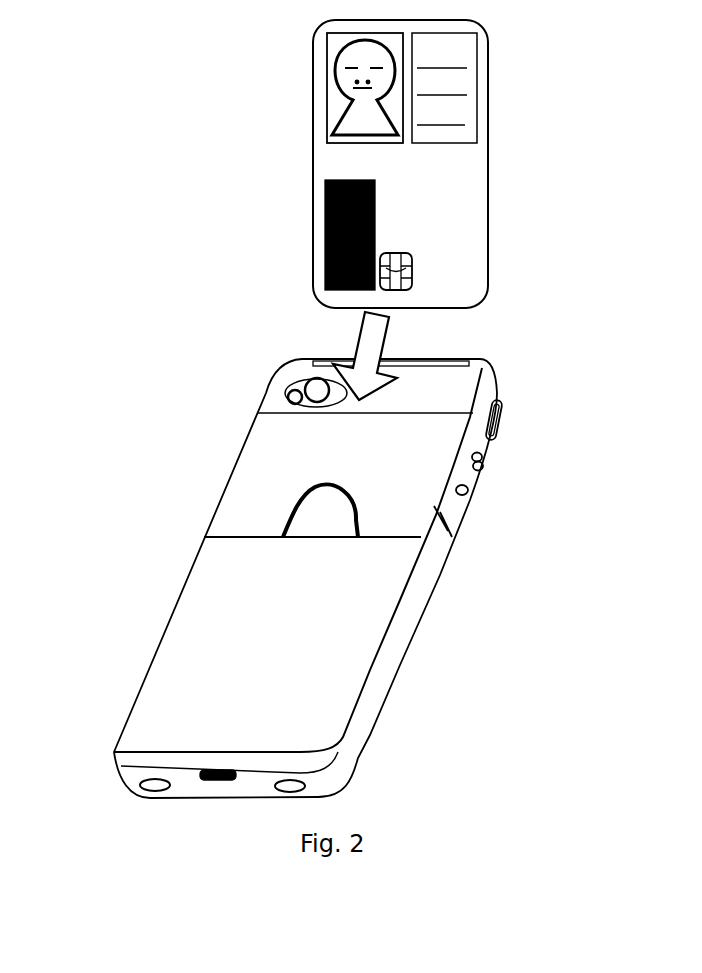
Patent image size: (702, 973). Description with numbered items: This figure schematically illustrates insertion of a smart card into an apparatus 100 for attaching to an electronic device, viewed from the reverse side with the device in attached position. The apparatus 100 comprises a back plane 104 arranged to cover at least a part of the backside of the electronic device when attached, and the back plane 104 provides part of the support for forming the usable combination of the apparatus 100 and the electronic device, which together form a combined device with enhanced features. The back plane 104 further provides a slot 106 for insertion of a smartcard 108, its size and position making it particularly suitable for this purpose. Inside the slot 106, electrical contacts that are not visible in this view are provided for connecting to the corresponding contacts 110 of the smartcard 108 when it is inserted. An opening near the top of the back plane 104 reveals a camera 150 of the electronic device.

The apparatus 100 is at (301, 555).
The back plane 104 is at (222, 570).
The slot 106 is at (387, 410).
The smartcard 108 is at (400, 164).
The contacts 110 is at (410, 273).
The camera 150 is at (287, 395).